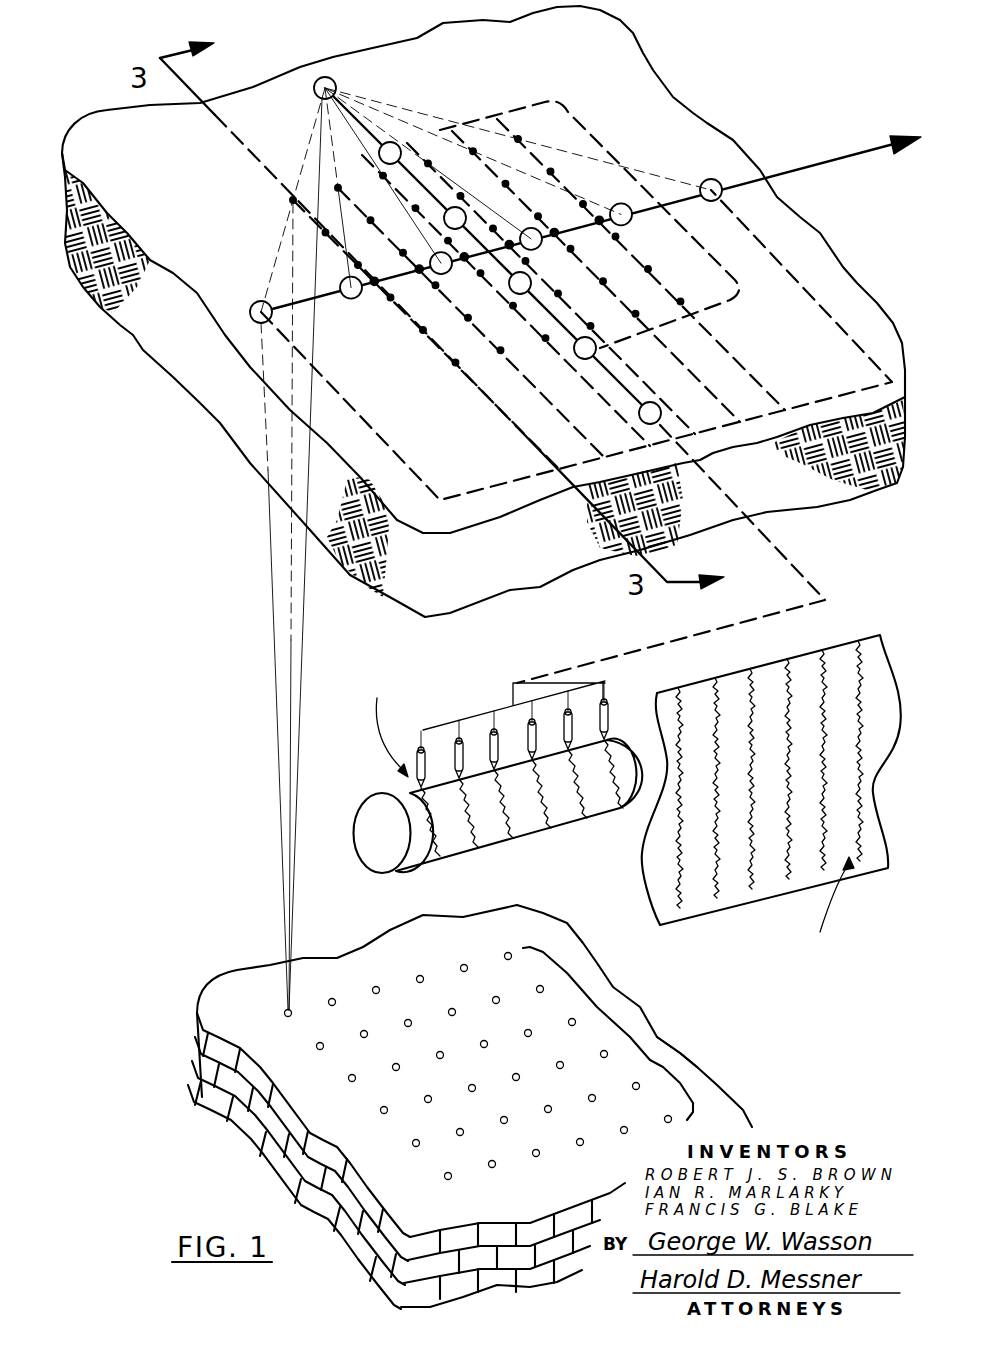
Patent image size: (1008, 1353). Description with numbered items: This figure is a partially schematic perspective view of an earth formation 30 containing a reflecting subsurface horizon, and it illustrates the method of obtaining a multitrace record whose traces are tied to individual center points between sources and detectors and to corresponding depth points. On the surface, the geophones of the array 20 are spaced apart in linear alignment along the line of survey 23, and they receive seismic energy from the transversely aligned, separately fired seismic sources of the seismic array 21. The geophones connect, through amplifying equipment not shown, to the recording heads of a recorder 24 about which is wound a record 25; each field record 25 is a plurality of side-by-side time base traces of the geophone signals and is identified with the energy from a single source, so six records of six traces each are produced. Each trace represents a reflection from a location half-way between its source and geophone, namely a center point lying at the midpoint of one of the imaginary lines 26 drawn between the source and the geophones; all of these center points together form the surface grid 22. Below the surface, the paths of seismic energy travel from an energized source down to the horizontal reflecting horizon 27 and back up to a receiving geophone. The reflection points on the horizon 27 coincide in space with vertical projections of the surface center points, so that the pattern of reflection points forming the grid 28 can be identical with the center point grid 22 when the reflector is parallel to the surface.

The array of geophones 20 is at (458, 224).
The seismic array 21 is at (510, 217).
The grid of center points 22 is at (680, 231).
The line of survey 23 is at (777, 173).
The recorder 24 is at (377, 850).
The record 25 is at (412, 790).
The imaginary lines 26 is at (440, 117).
The horizontal reflecting horizon 27 is at (240, 997).
The grid of reflection points 28 is at (683, 1060).
The earth formation 30 is at (173, 325).